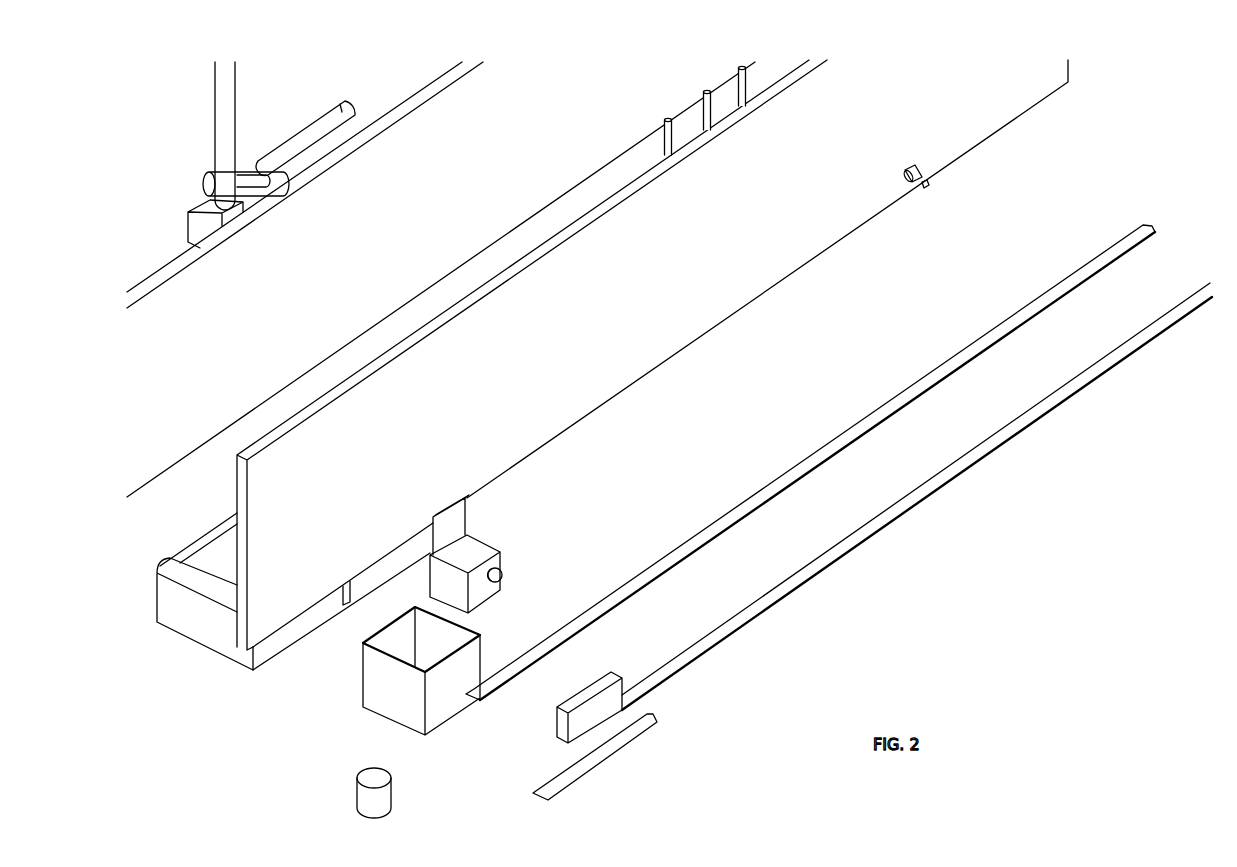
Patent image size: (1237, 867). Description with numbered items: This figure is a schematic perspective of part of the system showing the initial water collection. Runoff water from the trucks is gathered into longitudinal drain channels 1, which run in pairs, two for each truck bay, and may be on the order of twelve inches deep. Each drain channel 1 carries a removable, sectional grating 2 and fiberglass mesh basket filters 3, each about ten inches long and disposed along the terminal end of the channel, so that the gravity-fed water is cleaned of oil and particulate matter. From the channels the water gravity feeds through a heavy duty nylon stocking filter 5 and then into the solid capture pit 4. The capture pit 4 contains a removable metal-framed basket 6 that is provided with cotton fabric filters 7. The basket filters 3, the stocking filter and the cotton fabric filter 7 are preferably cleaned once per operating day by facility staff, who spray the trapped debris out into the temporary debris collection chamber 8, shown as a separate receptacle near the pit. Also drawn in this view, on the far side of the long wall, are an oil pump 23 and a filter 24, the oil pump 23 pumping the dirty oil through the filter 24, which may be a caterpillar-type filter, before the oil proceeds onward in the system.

The drain channel 1 is at (848, 530).
The removable sectional grating 2 is at (660, 720).
The fiberglass mesh basket filter 3 is at (617, 672).
The solid capture pit 4 is at (373, 657).
The nylon stocking filter 5 is at (510, 573).
The removable metal-framed basket 6 is at (468, 535).
The cotton fabric filter 7 is at (461, 510).
The temporary debris collection chamber 8 is at (388, 805).
The oil pump 23 is at (893, 176).
The filter 24 is at (938, 191).